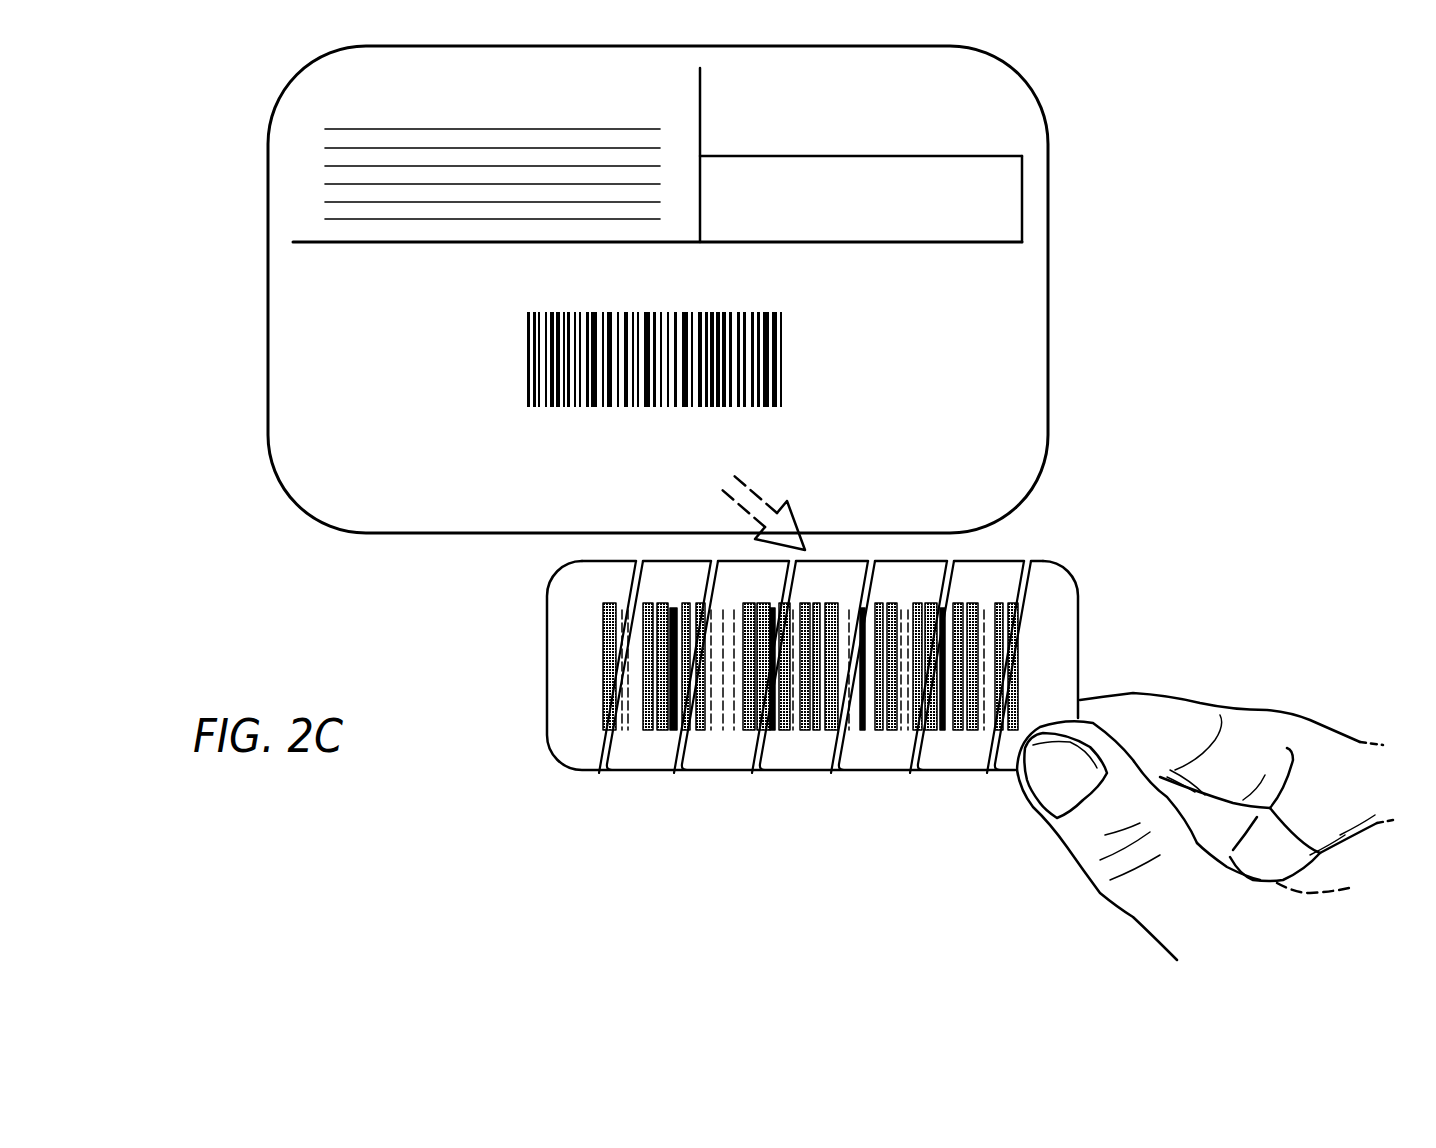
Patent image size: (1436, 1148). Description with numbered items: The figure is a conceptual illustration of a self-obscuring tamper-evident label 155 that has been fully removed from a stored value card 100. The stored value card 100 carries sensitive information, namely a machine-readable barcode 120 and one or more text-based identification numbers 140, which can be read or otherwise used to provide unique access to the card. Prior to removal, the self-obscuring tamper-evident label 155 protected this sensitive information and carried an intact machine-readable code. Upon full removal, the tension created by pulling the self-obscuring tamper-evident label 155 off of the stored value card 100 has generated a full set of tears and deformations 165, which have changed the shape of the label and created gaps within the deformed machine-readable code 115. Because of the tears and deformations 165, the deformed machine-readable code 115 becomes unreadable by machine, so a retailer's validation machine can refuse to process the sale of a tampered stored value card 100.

The stored value card 100 is at (292, 82).
The machine-readable barcode 120 is at (788, 306).
The text-based identification numbers 140 is at (510, 403).
The self-obscuring tamper-evident label 155 is at (547, 637).
The tears and deformations 165 is at (868, 572).
The deformed machine-readable code 115 is at (1020, 732).